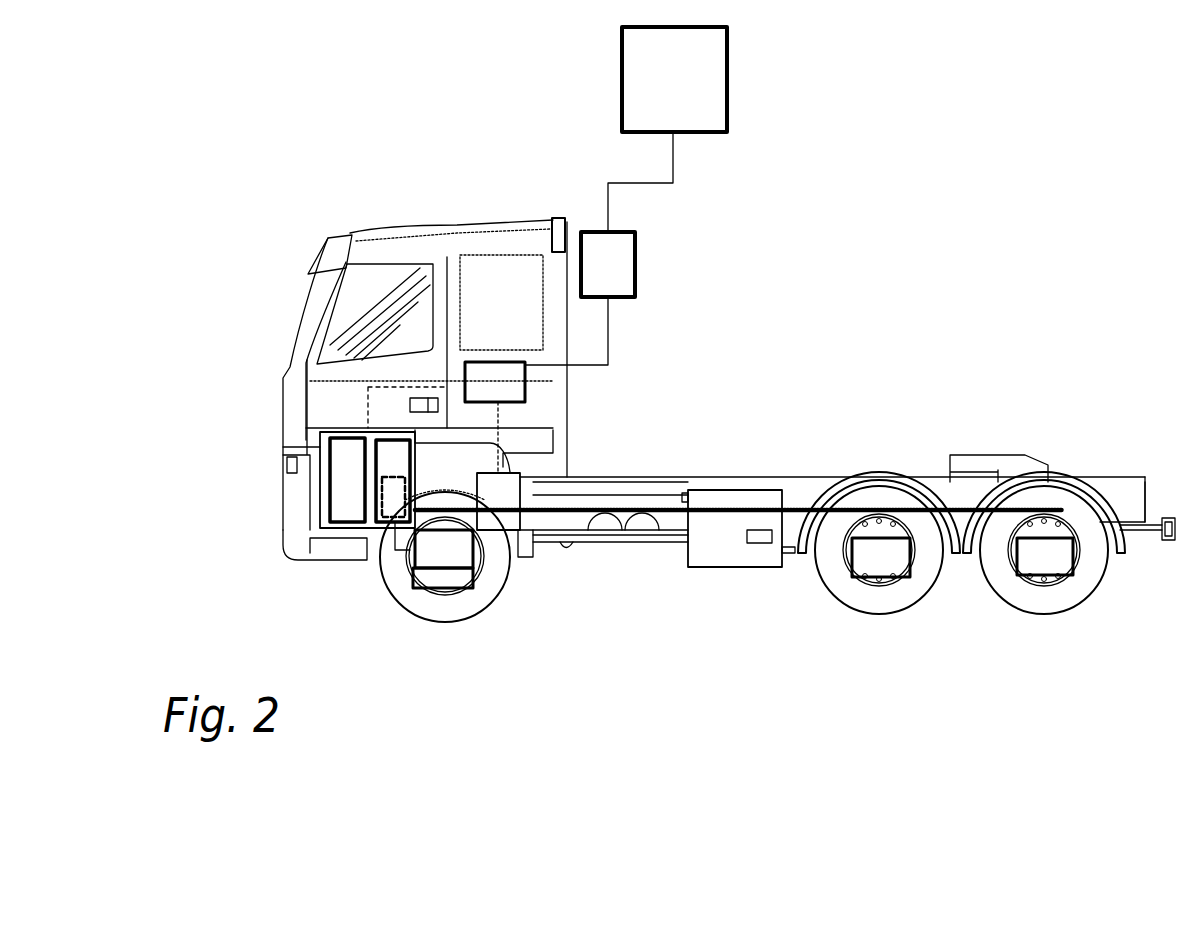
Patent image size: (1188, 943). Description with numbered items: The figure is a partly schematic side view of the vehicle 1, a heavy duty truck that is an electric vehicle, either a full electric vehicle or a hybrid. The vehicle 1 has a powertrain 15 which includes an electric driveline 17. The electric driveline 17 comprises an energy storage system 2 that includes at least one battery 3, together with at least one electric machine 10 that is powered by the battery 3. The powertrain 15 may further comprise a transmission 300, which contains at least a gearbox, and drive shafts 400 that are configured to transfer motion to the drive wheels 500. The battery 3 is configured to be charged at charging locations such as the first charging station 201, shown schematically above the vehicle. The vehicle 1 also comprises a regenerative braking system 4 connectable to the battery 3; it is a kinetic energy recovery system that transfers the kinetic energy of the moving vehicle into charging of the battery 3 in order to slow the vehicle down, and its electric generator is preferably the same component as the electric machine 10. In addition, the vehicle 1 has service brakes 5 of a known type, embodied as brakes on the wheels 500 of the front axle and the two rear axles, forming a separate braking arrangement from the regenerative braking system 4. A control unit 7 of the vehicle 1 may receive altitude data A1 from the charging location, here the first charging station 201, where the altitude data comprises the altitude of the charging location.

The vehicle 1 is at (328, 222).
The energy storage system 2 is at (378, 437).
The battery 3 is at (385, 525).
The regenerative braking system 4 is at (470, 583).
The service brakes 5 is at (478, 550).
The control unit 7 is at (512, 385).
The electric machine 10 is at (333, 500).
The powertrain 15 is at (737, 353).
The electric driveline 17 is at (333, 530).
The first charging station 201 is at (727, 73).
The altitude data A1 is at (635, 232).
The transmission 300 is at (537, 540).
The drive shafts 400 is at (785, 500).
The drive wheels 500 is at (895, 590).